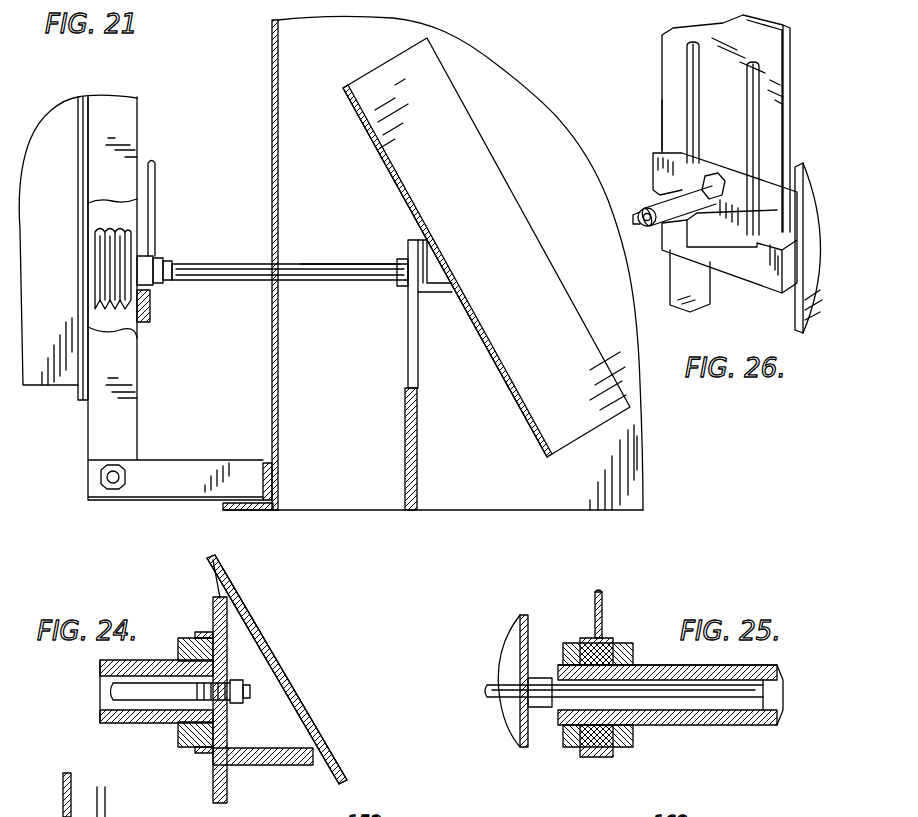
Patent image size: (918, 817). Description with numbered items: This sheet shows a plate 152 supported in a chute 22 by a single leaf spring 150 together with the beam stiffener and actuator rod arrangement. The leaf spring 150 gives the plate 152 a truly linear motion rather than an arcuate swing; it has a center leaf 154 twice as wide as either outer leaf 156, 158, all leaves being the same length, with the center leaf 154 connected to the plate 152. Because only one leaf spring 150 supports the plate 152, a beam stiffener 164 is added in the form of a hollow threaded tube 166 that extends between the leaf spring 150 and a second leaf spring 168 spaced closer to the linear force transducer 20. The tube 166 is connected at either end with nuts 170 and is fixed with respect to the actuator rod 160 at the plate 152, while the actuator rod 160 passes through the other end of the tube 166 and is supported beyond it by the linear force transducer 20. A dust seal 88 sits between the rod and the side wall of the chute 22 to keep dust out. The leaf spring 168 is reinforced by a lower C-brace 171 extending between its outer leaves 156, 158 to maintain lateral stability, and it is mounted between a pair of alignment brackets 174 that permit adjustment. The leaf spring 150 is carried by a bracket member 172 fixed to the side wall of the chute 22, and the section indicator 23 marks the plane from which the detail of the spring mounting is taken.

In FIG. 21, the linear force transducer 20 is at (44, 396).
In FIG. 21, the chute 22 is at (272, 372).
In FIG. 21, the section line 23 is at (187, 122).
In FIG. 21, the dust seal 88 is at (100, 268).
In FIG. 25, the dust seal 88 is at (513, 735).
In FIG. 21, the leaf spring 150 is at (429, 353).
In FIG. 24, the leaf spring 150 is at (218, 790).
In FIG. 21, the plate 152 is at (404, 200).
In FIG. 24, the plate 152 is at (263, 648).
In FIG. 26, the center leaf 154 is at (740, 117).
In FIG. 26, the outer leaf 156 is at (667, 127).
In FIG. 26, the outer leaf 158 is at (778, 148).
In FIG. 26, the actuator rod 160 is at (633, 227).
In FIG. 24, the actuator rod 160 is at (113, 694).
In FIG. 25, the actuator rod 160 is at (485, 697).
In FIG. 21, the beam stiffener 164 is at (323, 284).
In FIG. 26, the beam stiffener 164 is at (637, 203).
In FIG. 25, the beam stiffener 164 is at (788, 724).
In FIG. 21, the hollow threaded tube 166 is at (226, 264).
In FIG. 24, the hollow threaded tube 166 is at (120, 722).
In FIG. 25, the hollow threaded tube 166 is at (700, 724).
In FIG. 21, the leaf spring 168 is at (156, 184).
In FIG. 26, the leaf spring 168 is at (650, 107).
In FIG. 25, the leaf spring 168 is at (607, 603).
In FIG. 21, the nuts 170 is at (163, 260).
In FIG. 26, the nuts 170 is at (713, 175).
In FIG. 24, the nuts 170 is at (185, 745).
In FIG. 25, the nuts 170 is at (563, 748).
In FIG. 21, the lower C-brace 171 is at (150, 306).
In FIG. 26, the lower C-brace 171 is at (740, 270).
In FIG. 21, the bracket member 172 is at (416, 441).
In FIG. 21, the alignment brackets 174 is at (130, 421).
In FIG. 26, the alignment brackets 174 is at (685, 306).